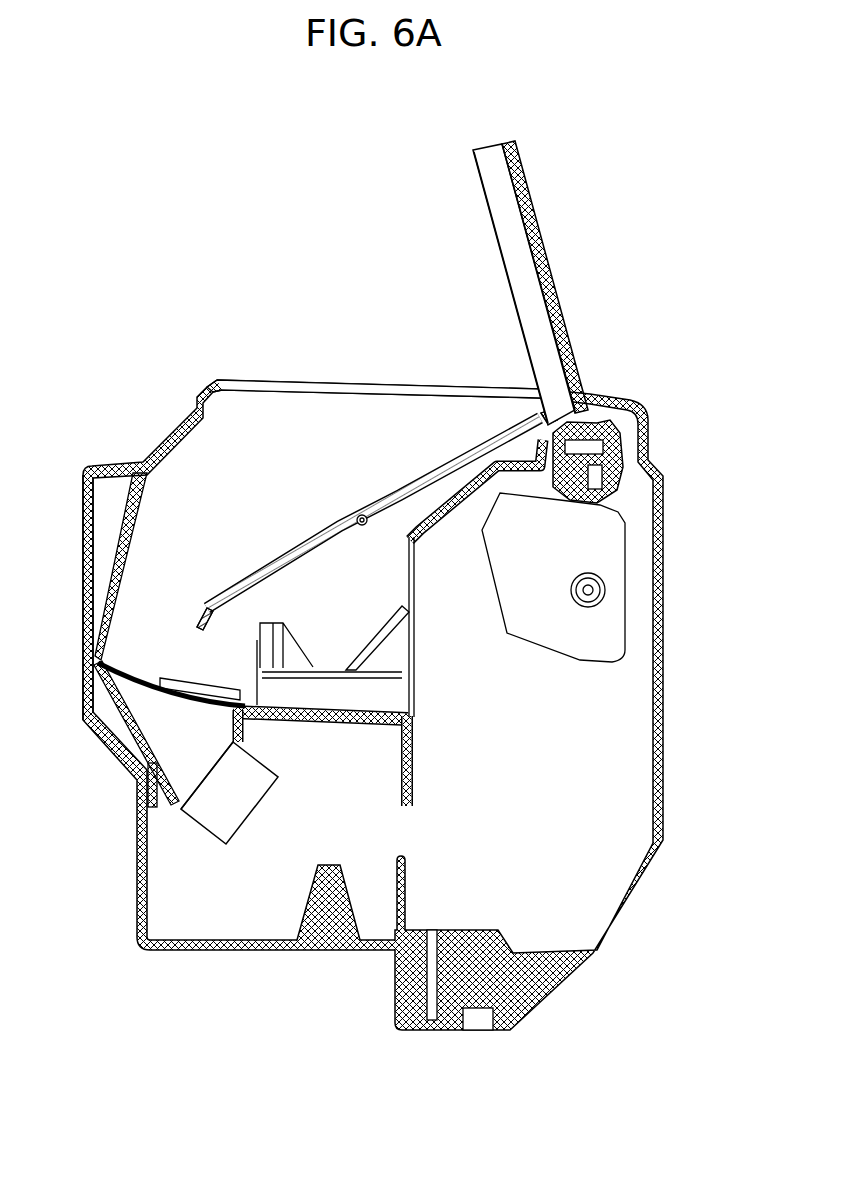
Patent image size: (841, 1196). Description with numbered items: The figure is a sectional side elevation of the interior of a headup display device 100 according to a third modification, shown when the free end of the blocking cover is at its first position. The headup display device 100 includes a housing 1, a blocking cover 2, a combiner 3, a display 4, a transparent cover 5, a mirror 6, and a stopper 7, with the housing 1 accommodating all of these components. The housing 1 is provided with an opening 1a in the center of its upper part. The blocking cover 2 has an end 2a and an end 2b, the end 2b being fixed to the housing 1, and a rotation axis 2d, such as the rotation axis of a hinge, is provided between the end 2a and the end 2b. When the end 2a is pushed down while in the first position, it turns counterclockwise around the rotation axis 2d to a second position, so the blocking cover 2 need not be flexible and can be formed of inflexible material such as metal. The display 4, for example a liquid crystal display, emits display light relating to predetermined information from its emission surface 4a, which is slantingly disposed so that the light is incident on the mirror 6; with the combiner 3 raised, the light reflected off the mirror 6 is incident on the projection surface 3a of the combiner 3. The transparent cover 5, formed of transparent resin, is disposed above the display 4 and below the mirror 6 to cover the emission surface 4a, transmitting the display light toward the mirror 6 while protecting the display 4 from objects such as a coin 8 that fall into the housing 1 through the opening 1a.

The headup display device 100 is at (281, 245).
The housing 1 is at (664, 757).
The opening 1a is at (278, 380).
The blocking cover 2 is at (290, 556).
The end 2a is at (232, 588).
The end 2b is at (506, 428).
The rotation axis 2d is at (358, 512).
The combiner 3 is at (540, 218).
The projection surface 3a is at (528, 217).
The display 4 is at (262, 760).
The emission surface 4a is at (207, 773).
The transparent cover 5 is at (138, 687).
The mirror 6 is at (110, 548).
The stopper 7 is at (268, 623).
The coin 8 is at (238, 688).